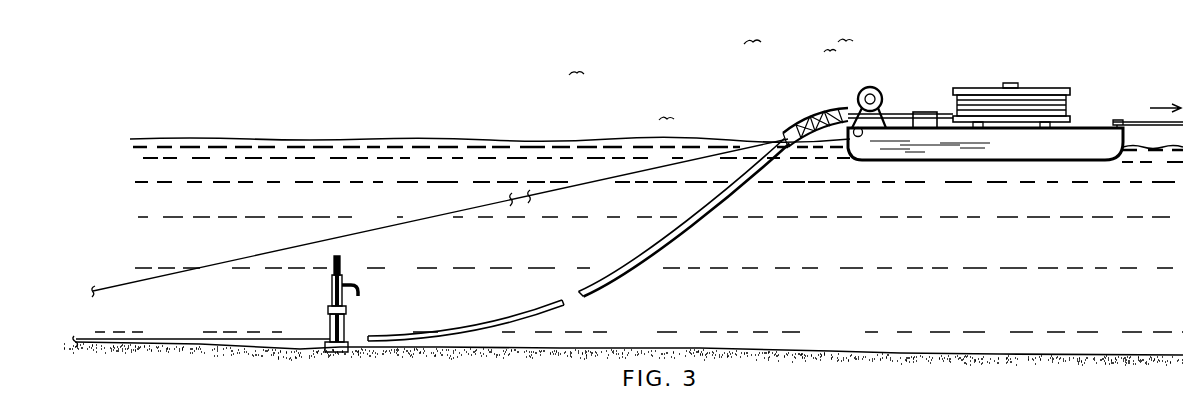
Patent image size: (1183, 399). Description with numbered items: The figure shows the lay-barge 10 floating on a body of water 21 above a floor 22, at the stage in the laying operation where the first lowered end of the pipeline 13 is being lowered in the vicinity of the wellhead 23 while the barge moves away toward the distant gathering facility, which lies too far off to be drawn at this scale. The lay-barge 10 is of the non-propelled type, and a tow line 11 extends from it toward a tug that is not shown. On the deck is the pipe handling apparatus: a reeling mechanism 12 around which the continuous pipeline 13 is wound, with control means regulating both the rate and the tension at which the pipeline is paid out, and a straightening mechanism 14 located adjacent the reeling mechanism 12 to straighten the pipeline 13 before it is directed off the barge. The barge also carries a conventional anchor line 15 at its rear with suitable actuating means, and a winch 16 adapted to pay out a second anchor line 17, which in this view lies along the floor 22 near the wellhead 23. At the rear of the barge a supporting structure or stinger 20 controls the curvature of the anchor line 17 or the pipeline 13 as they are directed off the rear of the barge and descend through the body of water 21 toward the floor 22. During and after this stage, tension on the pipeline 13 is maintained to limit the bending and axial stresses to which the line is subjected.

The lay-barge 10 is at (1088, 95).
The tow line 11 is at (1132, 121).
The reeling mechanism 12 is at (977, 92).
The pipeline 13 is at (646, 264).
The straightening mechanism 14 is at (926, 110).
The anchor line 15 is at (398, 226).
The winch 16 is at (869, 92).
The second anchor line 17 is at (180, 339).
The stinger 20 is at (795, 129).
The body of water 21 is at (320, 139).
The floor 22 is at (848, 350).
The wellhead 23 is at (333, 328).